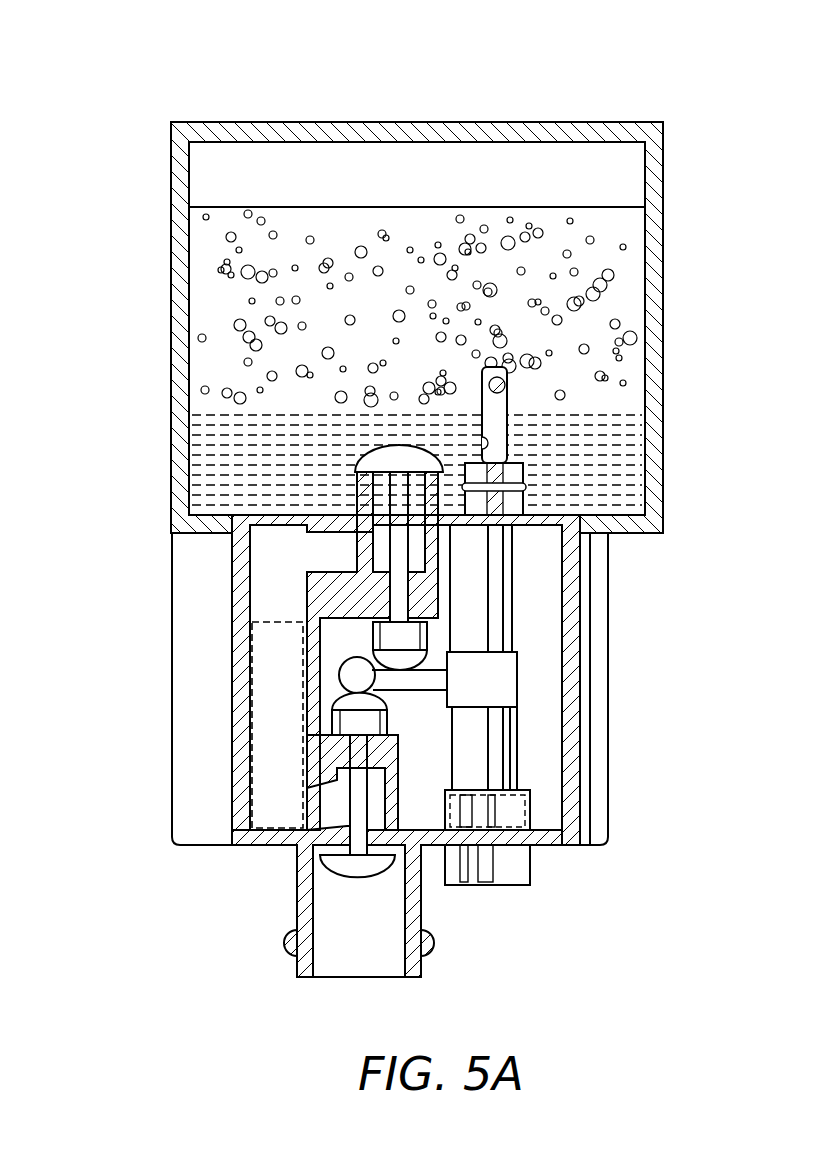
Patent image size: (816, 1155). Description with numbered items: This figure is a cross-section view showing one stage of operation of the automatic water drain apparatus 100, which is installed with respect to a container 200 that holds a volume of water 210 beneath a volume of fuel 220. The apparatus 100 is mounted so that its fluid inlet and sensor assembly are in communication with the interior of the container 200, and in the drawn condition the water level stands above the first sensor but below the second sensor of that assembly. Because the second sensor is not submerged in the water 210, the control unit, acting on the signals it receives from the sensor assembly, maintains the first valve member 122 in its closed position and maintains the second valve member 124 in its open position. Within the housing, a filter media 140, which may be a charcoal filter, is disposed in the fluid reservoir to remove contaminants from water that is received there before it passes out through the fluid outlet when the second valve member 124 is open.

The automatic water drain apparatus 100 is at (156, 630).
The first valve member 122 is at (398, 445).
The second valve member 124 is at (353, 877).
The filter media 140 is at (252, 696).
The container 200 is at (660, 53).
The water 210 is at (266, 461).
The fuel 220 is at (278, 384).